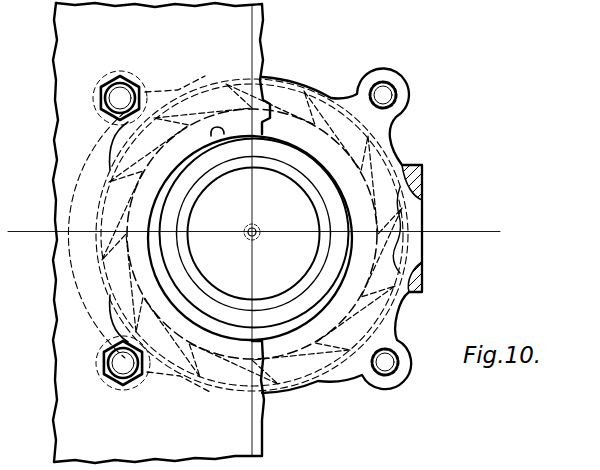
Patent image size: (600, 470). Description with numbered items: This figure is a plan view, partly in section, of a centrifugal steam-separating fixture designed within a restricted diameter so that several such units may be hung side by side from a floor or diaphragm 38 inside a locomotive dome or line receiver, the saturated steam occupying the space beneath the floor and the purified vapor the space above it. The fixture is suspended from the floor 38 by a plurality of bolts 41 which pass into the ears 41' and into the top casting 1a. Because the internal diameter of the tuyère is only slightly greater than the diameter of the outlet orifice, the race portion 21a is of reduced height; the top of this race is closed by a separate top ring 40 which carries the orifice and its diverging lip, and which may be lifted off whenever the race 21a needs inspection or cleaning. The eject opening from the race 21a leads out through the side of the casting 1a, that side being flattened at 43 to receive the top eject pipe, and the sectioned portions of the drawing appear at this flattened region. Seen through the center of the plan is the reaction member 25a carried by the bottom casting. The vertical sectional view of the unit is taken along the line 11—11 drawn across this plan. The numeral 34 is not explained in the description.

The floor or diaphragm 38 is at (161, 233).
The section line 11 is at (254, 230).
The reaction member 25a is at (254, 234).
The top casting 1a is at (322, 388).
The top ring 40 is at (252, 234).
The tab 34 is at (222, 130).
The bolts 41 is at (121, 224).
The ears 41' is at (408, 228).
The race portion 21a is at (403, 211).
The flattened side 43 is at (425, 277).